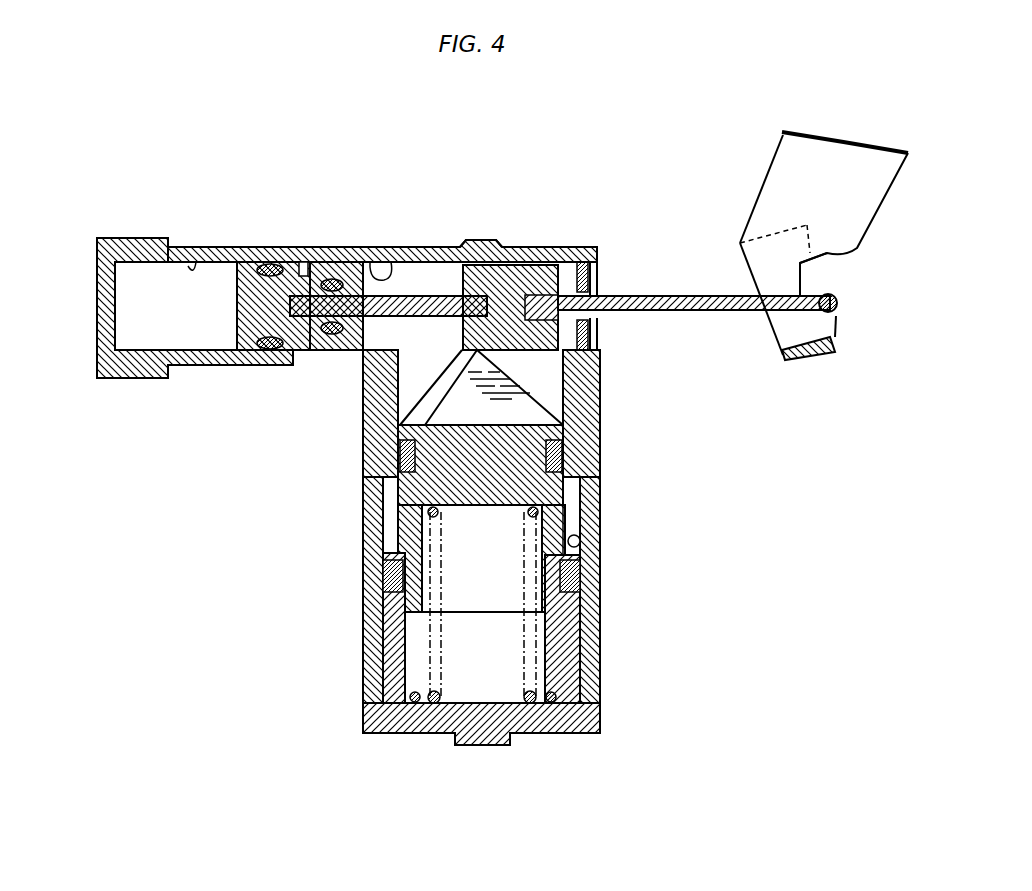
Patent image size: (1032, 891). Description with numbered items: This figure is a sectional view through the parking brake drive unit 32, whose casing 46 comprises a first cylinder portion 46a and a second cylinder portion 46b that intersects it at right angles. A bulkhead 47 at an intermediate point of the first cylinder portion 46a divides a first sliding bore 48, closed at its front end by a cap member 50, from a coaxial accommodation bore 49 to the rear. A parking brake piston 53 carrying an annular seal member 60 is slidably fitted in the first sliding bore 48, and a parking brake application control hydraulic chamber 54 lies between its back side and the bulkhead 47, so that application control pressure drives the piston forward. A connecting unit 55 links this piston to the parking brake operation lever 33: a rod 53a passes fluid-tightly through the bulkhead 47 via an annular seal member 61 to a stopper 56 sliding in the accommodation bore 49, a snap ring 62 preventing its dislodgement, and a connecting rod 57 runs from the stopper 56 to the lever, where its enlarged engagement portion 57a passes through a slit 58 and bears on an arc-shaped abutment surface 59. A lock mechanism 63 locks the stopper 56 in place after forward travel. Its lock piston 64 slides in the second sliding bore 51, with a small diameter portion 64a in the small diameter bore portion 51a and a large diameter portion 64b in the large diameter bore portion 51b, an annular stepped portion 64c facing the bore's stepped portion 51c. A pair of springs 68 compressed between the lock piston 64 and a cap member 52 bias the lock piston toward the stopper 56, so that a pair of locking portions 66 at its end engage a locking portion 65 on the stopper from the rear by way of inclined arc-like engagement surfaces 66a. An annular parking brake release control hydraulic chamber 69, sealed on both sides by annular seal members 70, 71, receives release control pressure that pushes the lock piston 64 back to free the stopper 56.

The parking brake drive unit 32 is at (258, 243).
The parking brake operation lever 33 is at (778, 162).
The casing 46 is at (315, 526).
The first cylinder portion 46a is at (340, 367).
The second cylinder portion 46b is at (333, 590).
The bulkhead 47 is at (362, 262).
The first sliding bore 48 is at (196, 262).
The accommodation bore 49 is at (388, 262).
The cap member 50 is at (100, 352).
The second sliding bore 51 is at (623, 526).
The small diameter bore portion 51a is at (562, 388).
The large diameter bore portion 51b is at (597, 545).
The stepped portion 51c is at (600, 501).
The cap member 52 is at (365, 712).
The parking brake piston 53 is at (237, 340).
The rod 53a is at (412, 296).
The parking brake application control hydraulic chamber 54 is at (303, 262).
The connecting unit 55 is at (722, 318).
The stopper 56 is at (543, 268).
The connecting rod 57 is at (697, 296).
The enlarged engagement portion 57a is at (838, 312).
The slit 58 is at (770, 273).
The abutment surface 59 is at (812, 279).
The annular seal member 60 is at (268, 350).
The annular seal member 61 is at (323, 280).
The snap ring 62 is at (598, 268).
The lock mechanism 63 is at (583, 262).
The lock piston 64 is at (475, 560).
The small diameter portion 64a is at (566, 438).
The large diameter portion 64b is at (580, 600).
The annular stepped portion 64c is at (388, 542).
The locking portion 65 is at (488, 242).
The locking portion 66 is at (598, 365).
The engagement surface 66a is at (435, 398).
The spring 68 is at (425, 696).
The parking brake release control hydraulic chamber 69 is at (581, 541).
The annular seal member 70 is at (563, 462).
The annular seal member 71 is at (385, 580).